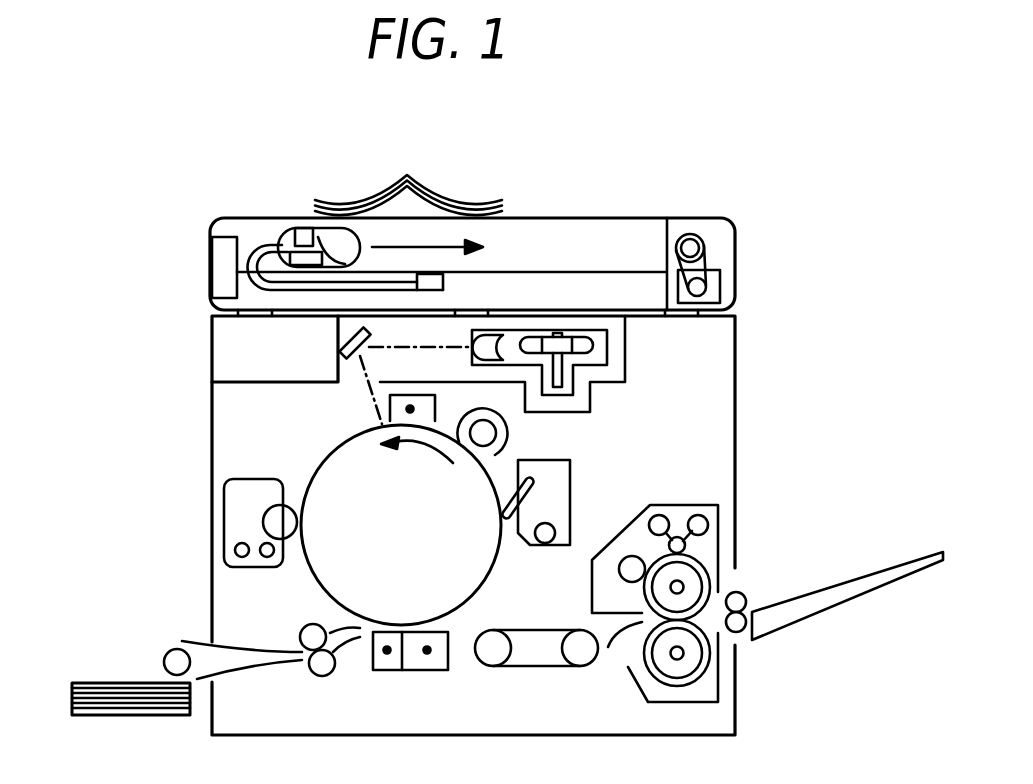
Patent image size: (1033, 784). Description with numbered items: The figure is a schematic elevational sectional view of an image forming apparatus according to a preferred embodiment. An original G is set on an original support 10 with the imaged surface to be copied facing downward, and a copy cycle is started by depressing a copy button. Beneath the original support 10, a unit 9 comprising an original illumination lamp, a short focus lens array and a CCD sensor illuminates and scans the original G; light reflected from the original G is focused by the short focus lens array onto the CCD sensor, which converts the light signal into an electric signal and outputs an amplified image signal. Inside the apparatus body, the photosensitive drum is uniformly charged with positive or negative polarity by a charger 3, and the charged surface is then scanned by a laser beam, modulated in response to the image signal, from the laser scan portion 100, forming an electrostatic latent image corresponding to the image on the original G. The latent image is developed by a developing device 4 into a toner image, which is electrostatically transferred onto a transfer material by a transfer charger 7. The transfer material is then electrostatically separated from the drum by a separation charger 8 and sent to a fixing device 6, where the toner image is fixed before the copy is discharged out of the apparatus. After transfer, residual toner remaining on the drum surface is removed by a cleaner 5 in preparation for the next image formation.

The charger 3 is at (390, 405).
The developing device 4 is at (252, 478).
The cleaner 5 is at (572, 483).
The fixing device 6 is at (688, 505).
The transfer charger 7 is at (387, 672).
The separation charger 8 is at (425, 672).
The unit 9 is at (283, 229).
The original support 10 is at (621, 218).
The laser scan portion 100 is at (607, 348).
The original G is at (459, 206).